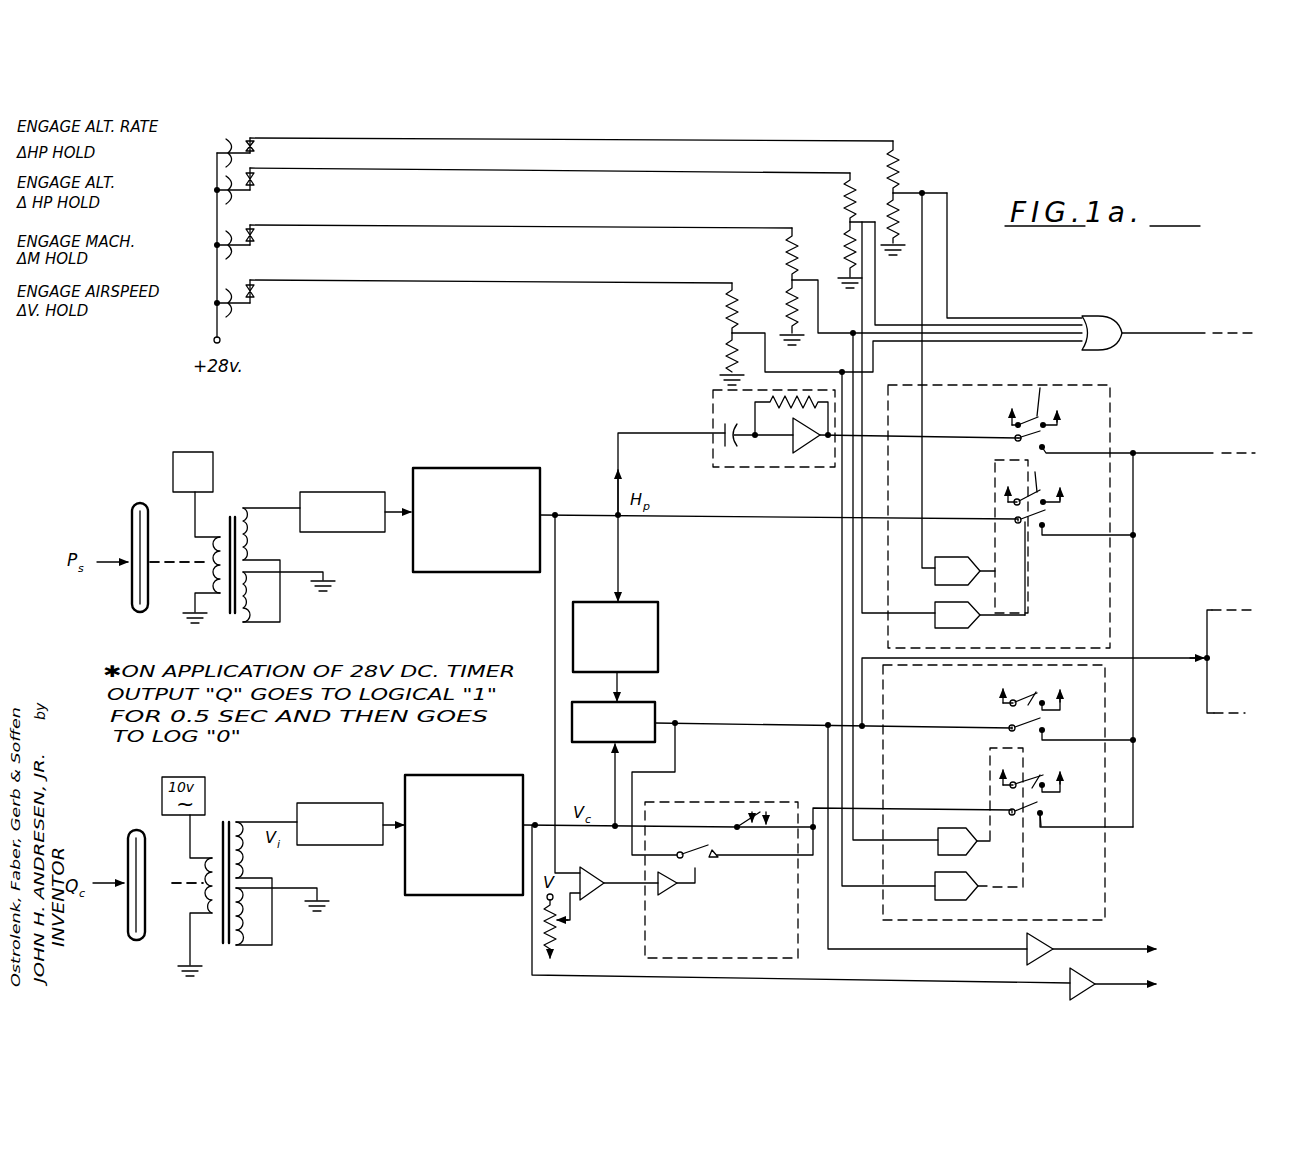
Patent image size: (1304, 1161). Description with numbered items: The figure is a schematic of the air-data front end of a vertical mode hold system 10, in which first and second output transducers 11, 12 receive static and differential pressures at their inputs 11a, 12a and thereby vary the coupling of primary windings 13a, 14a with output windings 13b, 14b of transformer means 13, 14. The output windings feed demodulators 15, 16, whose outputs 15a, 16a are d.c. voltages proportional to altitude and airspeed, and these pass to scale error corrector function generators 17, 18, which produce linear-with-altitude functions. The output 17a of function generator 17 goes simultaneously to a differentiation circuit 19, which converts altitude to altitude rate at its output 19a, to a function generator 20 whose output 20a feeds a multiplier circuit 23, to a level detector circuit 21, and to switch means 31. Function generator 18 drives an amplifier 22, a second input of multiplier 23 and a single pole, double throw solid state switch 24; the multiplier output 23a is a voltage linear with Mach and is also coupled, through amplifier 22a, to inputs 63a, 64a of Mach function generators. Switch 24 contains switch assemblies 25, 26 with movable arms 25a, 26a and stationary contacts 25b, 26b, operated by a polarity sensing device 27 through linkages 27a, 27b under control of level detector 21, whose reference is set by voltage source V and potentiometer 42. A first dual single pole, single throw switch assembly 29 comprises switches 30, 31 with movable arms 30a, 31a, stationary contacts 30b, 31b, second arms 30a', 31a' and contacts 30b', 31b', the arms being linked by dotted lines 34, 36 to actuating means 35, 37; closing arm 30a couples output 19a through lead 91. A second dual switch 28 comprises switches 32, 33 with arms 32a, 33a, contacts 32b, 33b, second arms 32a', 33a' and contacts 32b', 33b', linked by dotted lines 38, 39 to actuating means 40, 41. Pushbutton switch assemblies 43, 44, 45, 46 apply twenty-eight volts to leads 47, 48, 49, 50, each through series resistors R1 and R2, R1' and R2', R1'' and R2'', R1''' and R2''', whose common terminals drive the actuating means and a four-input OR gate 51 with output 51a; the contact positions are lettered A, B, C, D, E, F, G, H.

The altitude sensing channel 10 is at (147, 441).
The first output transducer 11 is at (128, 507).
The input of first output transducer 11a is at (113, 552).
The second output transducer 12 is at (124, 832).
The input of second output transducer 12a is at (110, 877).
The transformer means 13 is at (252, 496).
The primary winding 13a is at (208, 537).
The output winding 13b is at (275, 505).
The transformer means 14 is at (254, 797).
The primary winding 14a is at (215, 845).
The output winding 14b is at (273, 820).
The demodulator 15 is at (350, 490).
The demodulator output 15a is at (399, 504).
The demodulator 16 is at (347, 792).
The demodulator output 16a is at (396, 822).
The scale error corrector function generator 17 is at (493, 464).
The output of function generator 17 17a is at (552, 508).
The scale error corrector function generator 18 is at (440, 895).
The differentiation circuit 19 is at (712, 404).
The output of differentiation circuit 19a is at (945, 440).
The function generator 20 is at (661, 651).
The function generator output 20a is at (635, 693).
The level detector circuit 21 is at (608, 858).
The amplifier 22 is at (1083, 983).
The amplifier 22a is at (1046, 948).
The multiplier circuit 23 is at (607, 747).
The multiplier output 23a is at (661, 722).
The single pole, double throw solid state switch 24 is at (697, 802).
The switch assembly 25 is at (733, 822).
The movable arm 25a is at (756, 808).
The stationary contact 25b is at (770, 822).
The switch assembly 26 is at (679, 850).
The movable arm 26a is at (683, 850).
The stationary contact 26b is at (714, 853).
The polarity sensing device 27 is at (671, 889).
The mechanical linkage 27a is at (713, 886).
The mechanical linkage 27b is at (696, 876).
The second dual, single pole, single throw solid state switch 28 is at (1104, 875).
The first dual, single pole, single throw solid state switch assembly 29 is at (992, 385).
The switch 30 is at (1008, 424).
The movable arm 30a is at (986, 425).
The second switch arm 30a' is at (1062, 387).
The stationary contact 30b is at (1147, 438).
The stationary contact 30b' is at (1077, 411).
The switch 31 is at (1003, 499).
The movable arm 31a is at (1016, 568).
The second switch arm 31a' is at (1046, 469).
The stationary contact 31b is at (1087, 518).
The stationary contact 31b' is at (1078, 490).
The switch assembly 32 is at (1000, 708).
The movable arm 32a is at (977, 715).
The second switch arm 32a' is at (1033, 685).
The stationary contact 32b is at (1087, 721).
The stationary contact 32b' is at (1071, 686).
The switch assembly 33 is at (999, 783).
The movable arm 33a is at (1053, 835).
The second switch arm 33a' is at (1039, 764).
The stationary contact 33b is at (1085, 807).
The stationary contact 33b' is at (1074, 781).
The mechanical linkage 34 is at (995, 473).
The switch arm actuating means 35 is at (963, 582).
The mechanical linkage 36 is at (1029, 598).
The switch arm actuating means 37 is at (963, 625).
The mechanical linkage 38 is at (990, 775).
The mechanical linkage 39 is at (1025, 880).
The switch arm actuating means 40 is at (964, 841).
The switch arm actuating means 41 is at (962, 886).
The adjustable potentiometer element 42 is at (558, 940).
The pushbutton switch assembly 43 is at (265, 145).
The pushbutton switch assembly 44 is at (265, 188).
The pushbutton switch assembly 45 is at (265, 243).
The pushbutton switch assembly 46 is at (265, 298).
The lead 47 is at (571, 128).
The lead 48 is at (432, 152).
The lead 49 is at (437, 203).
The lead 50 is at (437, 265).
The four-input OR gate 51 is at (1100, 316).
The OR gate output 51a is at (1136, 333).
The input of Mach function generator 63a is at (1212, 610).
The input of Mach function generator 64a is at (1214, 716).
The lead 91 is at (1198, 437).
The resistor R1 is at (878, 167).
The resistor R2 is at (881, 224).
The resistor R1' is at (829, 197).
The resistor R2' is at (835, 255).
The resistor R1'' is at (770, 254).
The resistor R2'' is at (774, 312).
The resistor R1''' is at (705, 308).
The resistor R2''' is at (704, 359).
The switch contact A is at (1012, 408).
The switch contact B is at (1021, 444).
The switch contact C is at (1005, 485).
The switch contact D is at (1021, 515).
The switch contact E is at (998, 688).
The switch contact F is at (1024, 732).
The switch contact G is at (1002, 768).
The switch contact H is at (1020, 817).